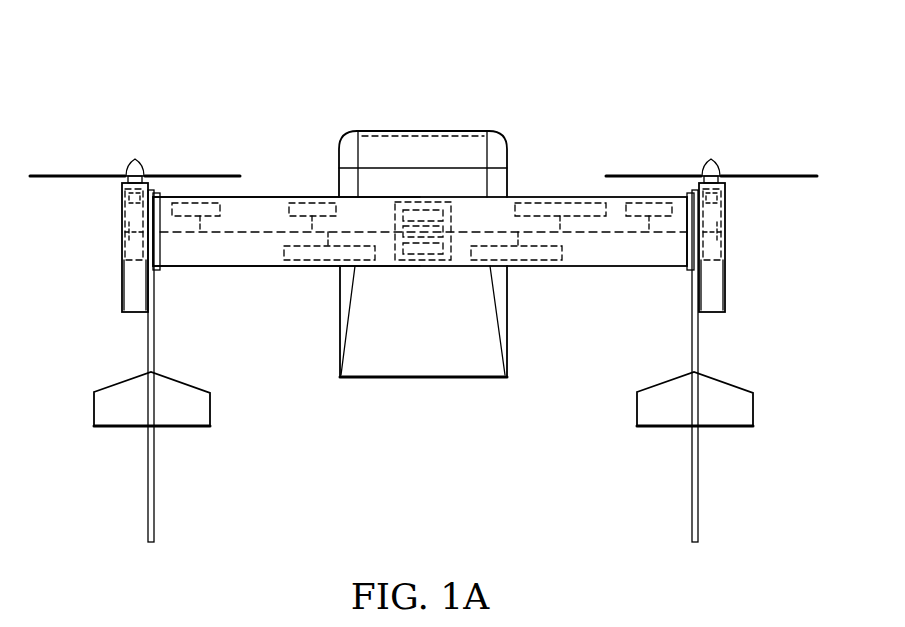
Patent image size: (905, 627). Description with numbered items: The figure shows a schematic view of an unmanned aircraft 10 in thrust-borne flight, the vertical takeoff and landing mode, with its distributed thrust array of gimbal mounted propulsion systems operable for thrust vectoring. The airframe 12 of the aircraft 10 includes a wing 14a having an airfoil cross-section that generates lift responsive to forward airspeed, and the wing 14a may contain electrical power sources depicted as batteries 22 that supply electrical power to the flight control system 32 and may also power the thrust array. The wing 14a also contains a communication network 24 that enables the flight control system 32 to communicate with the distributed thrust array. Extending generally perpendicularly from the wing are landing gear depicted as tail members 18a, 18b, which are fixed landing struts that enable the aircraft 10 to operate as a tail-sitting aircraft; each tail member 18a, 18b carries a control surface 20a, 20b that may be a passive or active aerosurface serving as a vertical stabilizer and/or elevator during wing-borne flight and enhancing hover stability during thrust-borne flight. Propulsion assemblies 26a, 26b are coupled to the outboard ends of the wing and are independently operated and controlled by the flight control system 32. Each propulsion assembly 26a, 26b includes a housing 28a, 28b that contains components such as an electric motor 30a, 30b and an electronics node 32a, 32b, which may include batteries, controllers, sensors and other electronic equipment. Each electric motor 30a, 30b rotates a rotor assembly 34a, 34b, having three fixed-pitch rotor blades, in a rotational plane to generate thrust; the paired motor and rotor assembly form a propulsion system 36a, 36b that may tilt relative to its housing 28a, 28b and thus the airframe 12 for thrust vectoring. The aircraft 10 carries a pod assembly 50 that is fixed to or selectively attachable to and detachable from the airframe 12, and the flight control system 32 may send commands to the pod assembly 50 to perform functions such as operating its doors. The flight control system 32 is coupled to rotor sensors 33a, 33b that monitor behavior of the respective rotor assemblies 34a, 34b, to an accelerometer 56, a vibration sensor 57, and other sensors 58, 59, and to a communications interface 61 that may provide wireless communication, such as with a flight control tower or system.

The aircraft 10 is at (274, 60).
The airframe 12 is at (597, 274).
The wing 14a is at (240, 267).
The tail member 18a is at (148, 484).
The tail member 18b is at (699, 484).
The control surface 20a is at (94, 408).
The control surface 20b is at (753, 408).
The batteries 22 is at (530, 267).
The communication network 24 is at (277, 228).
The propulsion assembly 26a is at (128, 303).
The propulsion assembly 26b is at (712, 303).
The housing 28a is at (128, 268).
The housing 28b is at (712, 268).
The electric motor 30a is at (124, 218).
The electric motor 30b is at (722, 218).
The electronics node 32a is at (124, 251).
The electronics node 32b is at (722, 250).
The flight control system 32 is at (424, 267).
The rotor sensor 33a is at (123, 197).
The rotor sensor 33b is at (722, 197).
The rotor assembly 34a is at (170, 176).
The rotor assembly 34b is at (668, 176).
The propulsion system 36a is at (133, 154).
The propulsion system 36b is at (714, 154).
The pod assembly 50 is at (424, 130).
The accelerometer 56 is at (533, 202).
The vibration sensor 57 is at (312, 202).
The sensor 58 is at (202, 222).
The sensor 59 is at (643, 202).
The communications interface 61 is at (318, 267).